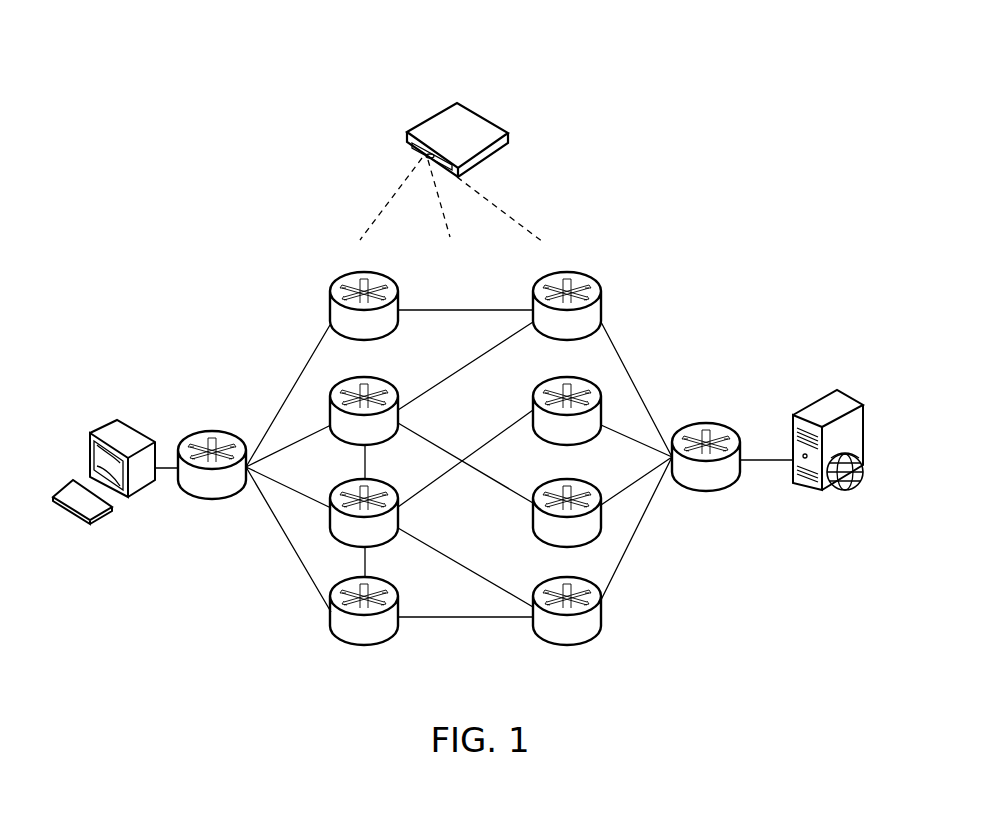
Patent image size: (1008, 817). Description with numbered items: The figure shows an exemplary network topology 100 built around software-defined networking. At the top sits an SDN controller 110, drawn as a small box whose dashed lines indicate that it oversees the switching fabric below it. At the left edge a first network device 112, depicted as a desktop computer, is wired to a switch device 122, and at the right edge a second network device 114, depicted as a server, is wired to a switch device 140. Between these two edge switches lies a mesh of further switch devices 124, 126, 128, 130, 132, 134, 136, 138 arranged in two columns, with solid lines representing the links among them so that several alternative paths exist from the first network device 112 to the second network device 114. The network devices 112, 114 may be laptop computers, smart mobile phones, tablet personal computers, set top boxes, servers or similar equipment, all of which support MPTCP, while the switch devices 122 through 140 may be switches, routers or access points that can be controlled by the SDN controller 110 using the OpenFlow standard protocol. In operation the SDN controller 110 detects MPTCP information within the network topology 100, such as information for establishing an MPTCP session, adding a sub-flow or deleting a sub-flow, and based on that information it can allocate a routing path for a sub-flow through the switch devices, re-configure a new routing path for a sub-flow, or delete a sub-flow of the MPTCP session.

The network topology 100 is at (625, 53).
The SDN controller 110 is at (475, 133).
The first network device 112 is at (113, 420).
The second network device 114 is at (808, 397).
The switch device 122 is at (212, 465).
The switch device 124 is at (364, 306).
The switch device 126 is at (567, 306).
The switch device 128 is at (364, 411).
The switch device 130 is at (567, 411).
The switch device 132 is at (364, 513).
The switch device 134 is at (567, 513).
The switch device 136 is at (364, 611).
The switch device 138 is at (567, 611).
The switch device 140 is at (706, 457).